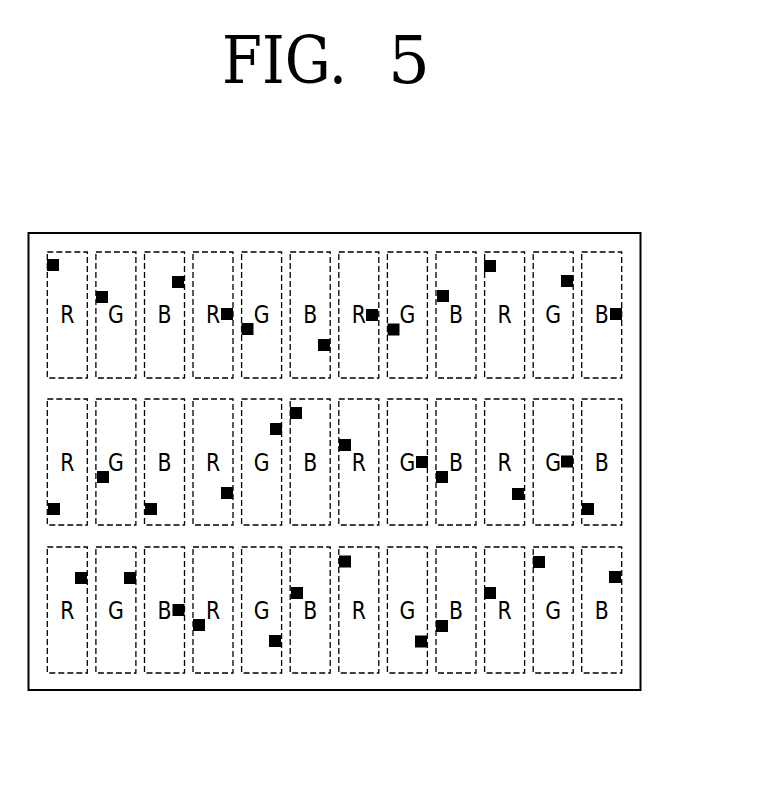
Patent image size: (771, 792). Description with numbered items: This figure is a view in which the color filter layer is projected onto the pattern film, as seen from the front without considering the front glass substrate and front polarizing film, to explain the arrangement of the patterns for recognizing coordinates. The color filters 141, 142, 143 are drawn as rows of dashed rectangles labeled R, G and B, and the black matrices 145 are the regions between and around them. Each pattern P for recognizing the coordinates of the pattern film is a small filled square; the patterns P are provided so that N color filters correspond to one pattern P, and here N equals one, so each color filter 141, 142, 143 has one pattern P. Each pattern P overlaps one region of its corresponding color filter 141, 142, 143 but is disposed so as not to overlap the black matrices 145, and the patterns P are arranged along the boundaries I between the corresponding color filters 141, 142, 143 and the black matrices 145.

The color filter 141 is at (502, 249).
The color filter 142 is at (551, 249).
The color filter 143 is at (605, 249).
The black matrix 145 is at (630, 460).
The pattern for recognizing coordinates P is at (370, 313).
The boundary I is at (379, 268).